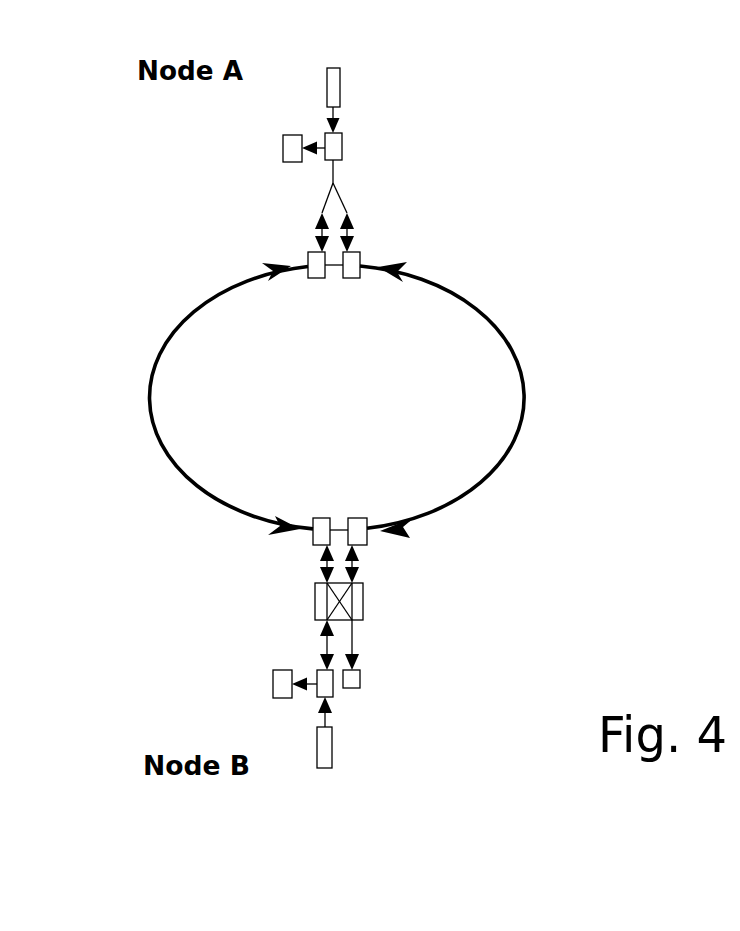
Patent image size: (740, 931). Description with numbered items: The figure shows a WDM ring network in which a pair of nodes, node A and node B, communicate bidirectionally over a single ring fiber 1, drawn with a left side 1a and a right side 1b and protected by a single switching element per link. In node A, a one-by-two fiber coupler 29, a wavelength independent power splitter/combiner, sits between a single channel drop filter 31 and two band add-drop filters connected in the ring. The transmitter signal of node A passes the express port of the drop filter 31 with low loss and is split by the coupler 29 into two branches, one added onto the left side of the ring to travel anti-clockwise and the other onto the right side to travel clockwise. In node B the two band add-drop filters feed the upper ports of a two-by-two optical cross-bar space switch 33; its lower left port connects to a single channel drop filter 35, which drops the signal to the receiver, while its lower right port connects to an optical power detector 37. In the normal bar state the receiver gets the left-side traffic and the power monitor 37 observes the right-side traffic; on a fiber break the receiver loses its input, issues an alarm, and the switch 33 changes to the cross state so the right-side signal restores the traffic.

The ring fiber 1 is at (335, 394).
The first ring fiber section 1a is at (150, 387).
The second ring fiber section 1b is at (525, 393).
The 1×2 fiber coupler 29 is at (335, 184).
The single channel drop filter 31 is at (342, 148).
The 2×2 optical cross-bar space switch 33 is at (313, 603).
The single channel drop filter 35 is at (329, 697).
The optical power detector 37 is at (357, 667).